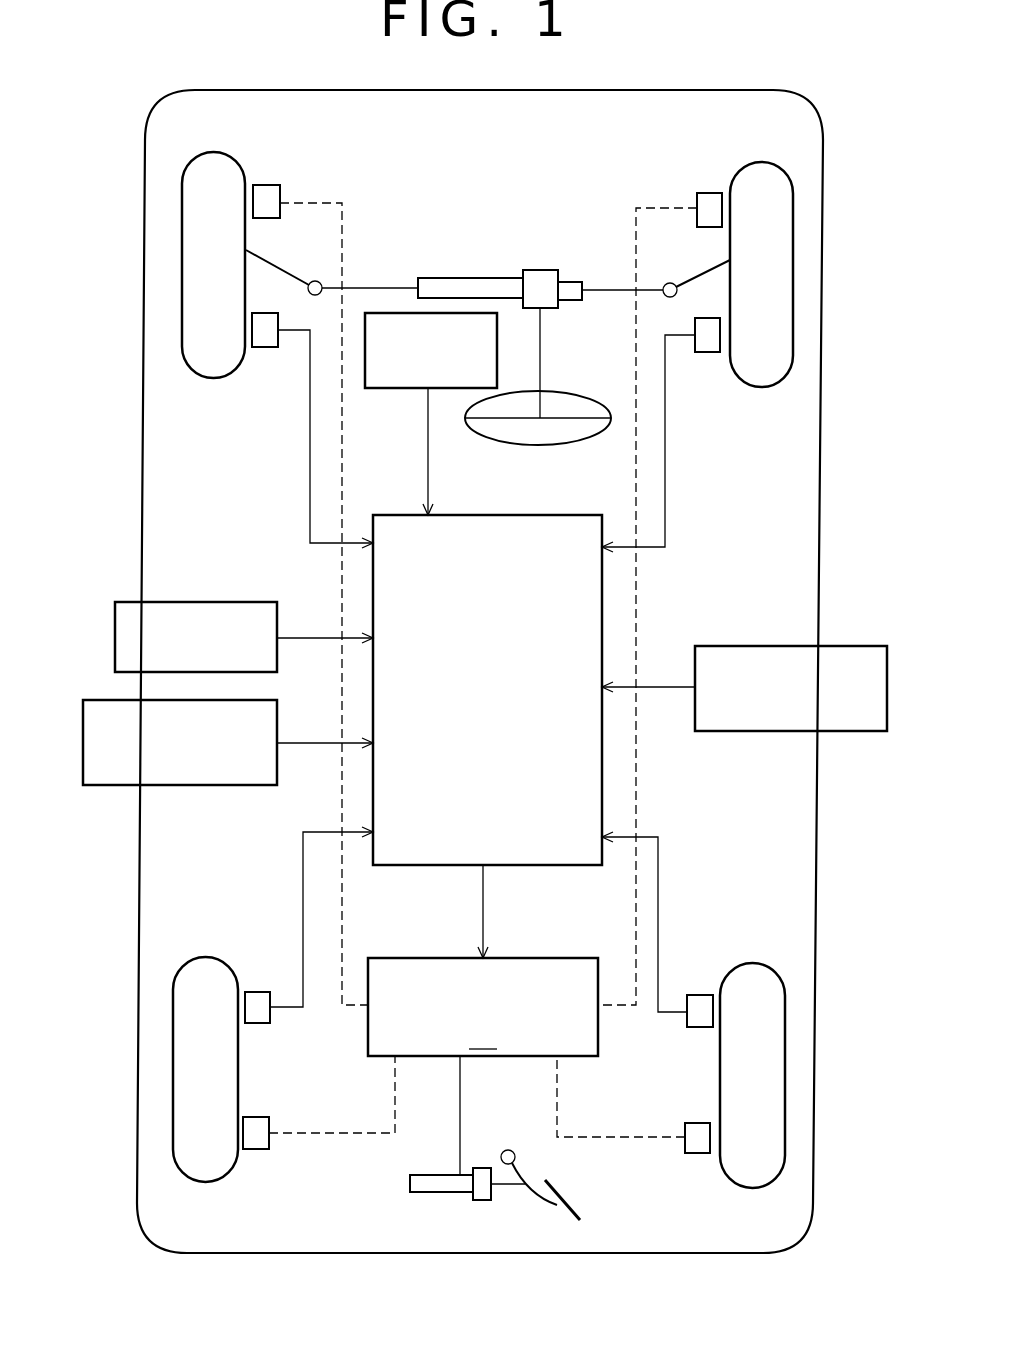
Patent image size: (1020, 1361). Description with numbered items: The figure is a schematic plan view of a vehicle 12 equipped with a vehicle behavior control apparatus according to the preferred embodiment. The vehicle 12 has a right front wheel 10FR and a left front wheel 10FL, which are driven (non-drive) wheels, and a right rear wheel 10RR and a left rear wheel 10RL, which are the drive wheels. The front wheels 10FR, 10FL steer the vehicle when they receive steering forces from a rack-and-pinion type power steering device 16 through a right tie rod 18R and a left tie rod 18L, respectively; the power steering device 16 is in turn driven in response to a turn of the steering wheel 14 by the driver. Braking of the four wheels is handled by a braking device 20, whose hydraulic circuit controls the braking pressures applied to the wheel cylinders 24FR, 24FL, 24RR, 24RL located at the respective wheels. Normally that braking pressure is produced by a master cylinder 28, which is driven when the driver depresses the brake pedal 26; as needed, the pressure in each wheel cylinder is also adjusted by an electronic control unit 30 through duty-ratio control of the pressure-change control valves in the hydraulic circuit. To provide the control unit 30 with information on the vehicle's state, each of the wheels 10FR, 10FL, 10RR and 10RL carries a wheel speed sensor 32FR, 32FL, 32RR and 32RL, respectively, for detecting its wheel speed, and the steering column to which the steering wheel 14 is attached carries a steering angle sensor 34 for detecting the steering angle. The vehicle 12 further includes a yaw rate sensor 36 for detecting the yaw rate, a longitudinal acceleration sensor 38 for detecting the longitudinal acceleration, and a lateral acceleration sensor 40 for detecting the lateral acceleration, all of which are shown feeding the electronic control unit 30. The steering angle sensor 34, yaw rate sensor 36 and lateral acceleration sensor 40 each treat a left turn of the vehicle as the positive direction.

The left front wheel 10FL is at (182, 286).
The right front wheel 10FR is at (793, 240).
The left rear wheel 10RL is at (173, 1048).
The right rear wheel 10RR is at (785, 1050).
The vehicle 12 is at (822, 423).
The steering wheel 14 is at (545, 445).
The rack-and-pinion type power steering device 16 is at (535, 258).
The left tie rod 18L is at (303, 250).
The right tie rod 18R is at (703, 274).
The braking device 20 is at (385, 1168).
The left front wheel cylinder 24FL is at (268, 192).
The right front wheel cylinder 24FR is at (710, 193).
The left rear wheel cylinder 24RL is at (255, 1122).
The right rear wheel cylinder 24RR is at (697, 1127).
The brake pedal 26 is at (575, 1205).
The master cylinder 28 is at (430, 1193).
The electronic control unit 30 is at (473, 719).
The left front wheel speed sensor 32FL is at (265, 347).
The right front wheel speed sensor 32FR is at (710, 352).
The left rear wheel speed sensor 32RL is at (258, 1003).
The right rear wheel speed sensor 32RR is at (700, 1003).
The steering angle sensor 34 is at (397, 388).
The yaw rate sensor 36 is at (218, 602).
The longitudinal acceleration sensor 38 is at (212, 785).
The lateral acceleration sensor 40 is at (765, 646).